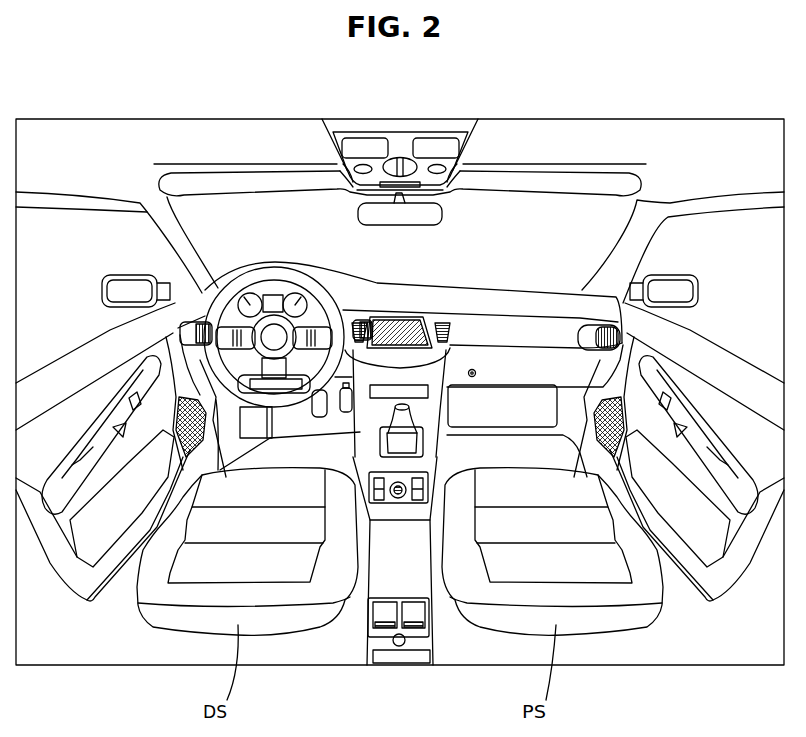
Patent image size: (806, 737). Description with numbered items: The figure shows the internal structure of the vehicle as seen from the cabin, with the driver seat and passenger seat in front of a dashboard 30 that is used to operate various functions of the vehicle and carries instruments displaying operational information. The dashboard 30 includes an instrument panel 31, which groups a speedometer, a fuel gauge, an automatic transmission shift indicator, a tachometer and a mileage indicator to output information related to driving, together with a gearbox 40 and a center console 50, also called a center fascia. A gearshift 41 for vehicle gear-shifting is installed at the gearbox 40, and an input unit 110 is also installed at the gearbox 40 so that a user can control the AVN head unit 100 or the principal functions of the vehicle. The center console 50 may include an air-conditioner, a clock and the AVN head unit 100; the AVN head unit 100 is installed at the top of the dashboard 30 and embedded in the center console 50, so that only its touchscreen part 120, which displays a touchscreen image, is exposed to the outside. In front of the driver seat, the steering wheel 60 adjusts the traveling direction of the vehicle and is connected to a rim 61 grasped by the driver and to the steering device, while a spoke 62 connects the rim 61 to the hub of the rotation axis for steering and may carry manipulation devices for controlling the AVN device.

The dashboard 30 is at (537, 320).
The instrument panel 31 is at (301, 298).
The gearbox 40 is at (423, 437).
The gearshift 41 is at (383, 433).
The center console 50 is at (400, 356).
The steering wheel 60 is at (274, 302).
The rim 61 is at (240, 282).
The spoke 62 is at (178, 333).
The AVN head unit 100 is at (422, 305).
The input unit 110 is at (427, 482).
The touchscreen part 120 is at (447, 337).